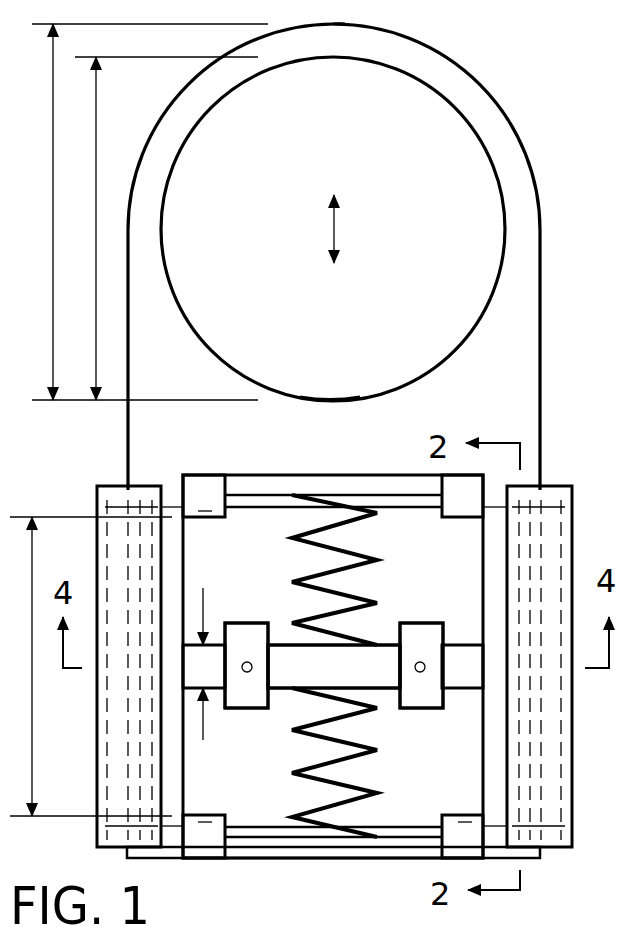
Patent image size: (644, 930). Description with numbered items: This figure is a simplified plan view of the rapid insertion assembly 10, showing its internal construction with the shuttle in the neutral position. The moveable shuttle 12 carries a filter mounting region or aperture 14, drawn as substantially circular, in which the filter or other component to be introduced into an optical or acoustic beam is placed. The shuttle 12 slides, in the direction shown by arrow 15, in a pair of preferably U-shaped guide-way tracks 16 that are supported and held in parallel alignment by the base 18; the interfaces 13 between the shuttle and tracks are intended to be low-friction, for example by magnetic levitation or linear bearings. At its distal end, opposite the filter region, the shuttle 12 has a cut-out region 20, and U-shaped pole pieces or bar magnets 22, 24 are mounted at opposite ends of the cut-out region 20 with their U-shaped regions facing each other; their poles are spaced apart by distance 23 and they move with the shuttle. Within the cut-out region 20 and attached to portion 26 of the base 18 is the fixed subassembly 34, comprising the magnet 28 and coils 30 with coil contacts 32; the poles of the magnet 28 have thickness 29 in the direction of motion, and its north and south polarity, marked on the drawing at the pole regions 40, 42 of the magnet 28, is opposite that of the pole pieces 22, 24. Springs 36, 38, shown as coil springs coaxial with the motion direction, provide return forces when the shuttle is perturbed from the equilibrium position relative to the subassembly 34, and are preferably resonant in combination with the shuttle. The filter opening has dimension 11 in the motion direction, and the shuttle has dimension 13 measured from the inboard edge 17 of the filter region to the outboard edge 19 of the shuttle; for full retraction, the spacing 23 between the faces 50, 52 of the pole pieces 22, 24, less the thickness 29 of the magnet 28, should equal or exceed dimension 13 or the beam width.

The rapid insertion assembly 10 is at (573, 422).
The dimension of filter region opening 11 is at (98, 115).
The moveable shuttle 12 is at (540, 346).
The shuttle dimension 13 is at (52, 151).
The filter mounting region or aperture 14 is at (409, 190).
The direction arrow 15 is at (332, 226).
The guide-way tracks 16 is at (112, 495).
The inboard edge 17 is at (336, 400).
The base 18 is at (410, 829).
The outboard edge 19 is at (338, 24).
The cut-out region 20 is at (472, 576).
The pole piece or bar magnet 22 is at (290, 852).
The pole spacing 23 is at (36, 710).
The pole piece or bar magnet 24 is at (296, 476).
The base portion 26 is at (382, 622).
The magnet 28 is at (342, 680).
The magnet thickness 29 is at (203, 603).
The coils 30 is at (245, 636).
The coil contacts 32 is at (245, 673).
The subassembly 34 is at (291, 620).
The spring 36 is at (360, 556).
The spring 38 is at (356, 762).
The carriage magnet N pole 40 is at (470, 645).
The carriage magnet S pole 42 is at (458, 689).
The magnet face 50 is at (205, 520).
The magnet face 52 is at (200, 815).